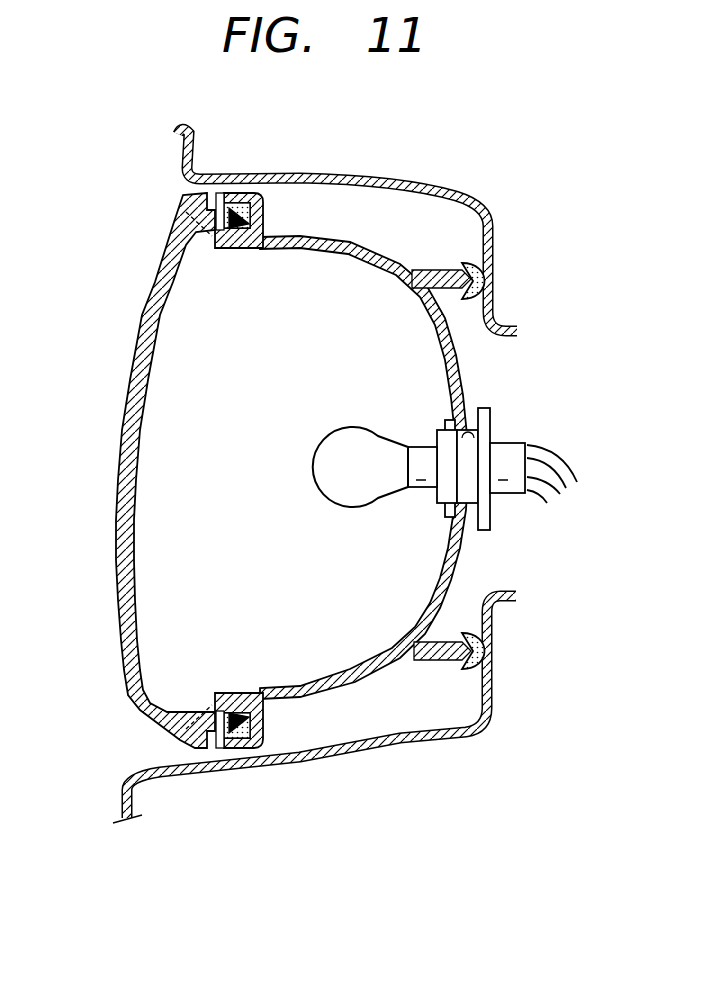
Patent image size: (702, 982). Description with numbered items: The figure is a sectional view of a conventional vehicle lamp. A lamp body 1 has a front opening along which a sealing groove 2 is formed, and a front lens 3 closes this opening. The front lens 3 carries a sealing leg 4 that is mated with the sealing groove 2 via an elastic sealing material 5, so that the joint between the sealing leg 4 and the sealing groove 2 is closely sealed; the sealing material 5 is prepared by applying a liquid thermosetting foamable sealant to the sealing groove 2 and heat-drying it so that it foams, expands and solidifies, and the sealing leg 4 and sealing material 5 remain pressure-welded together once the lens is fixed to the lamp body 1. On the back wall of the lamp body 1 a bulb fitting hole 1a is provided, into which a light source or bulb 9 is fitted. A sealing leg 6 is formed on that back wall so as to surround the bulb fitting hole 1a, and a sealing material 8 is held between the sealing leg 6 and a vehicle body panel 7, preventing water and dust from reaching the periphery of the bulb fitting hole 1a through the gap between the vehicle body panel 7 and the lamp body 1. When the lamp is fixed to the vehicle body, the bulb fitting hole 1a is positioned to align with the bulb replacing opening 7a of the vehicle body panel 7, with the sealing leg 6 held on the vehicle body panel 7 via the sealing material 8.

The lamp body 1 is at (470, 374).
The bulb fitting hole 1a is at (470, 438).
The sealing groove 2 is at (260, 207).
The front lens 3 is at (130, 373).
The sealing leg 4 is at (223, 192).
The sealing material 5 is at (237, 205).
The sealing leg 6 is at (432, 270).
The vehicle body panel 7 is at (360, 173).
The bulb replacing opening 7a is at (501, 593).
The sealing material 8 is at (474, 265).
The light source (bulb) 9 is at (299, 477).